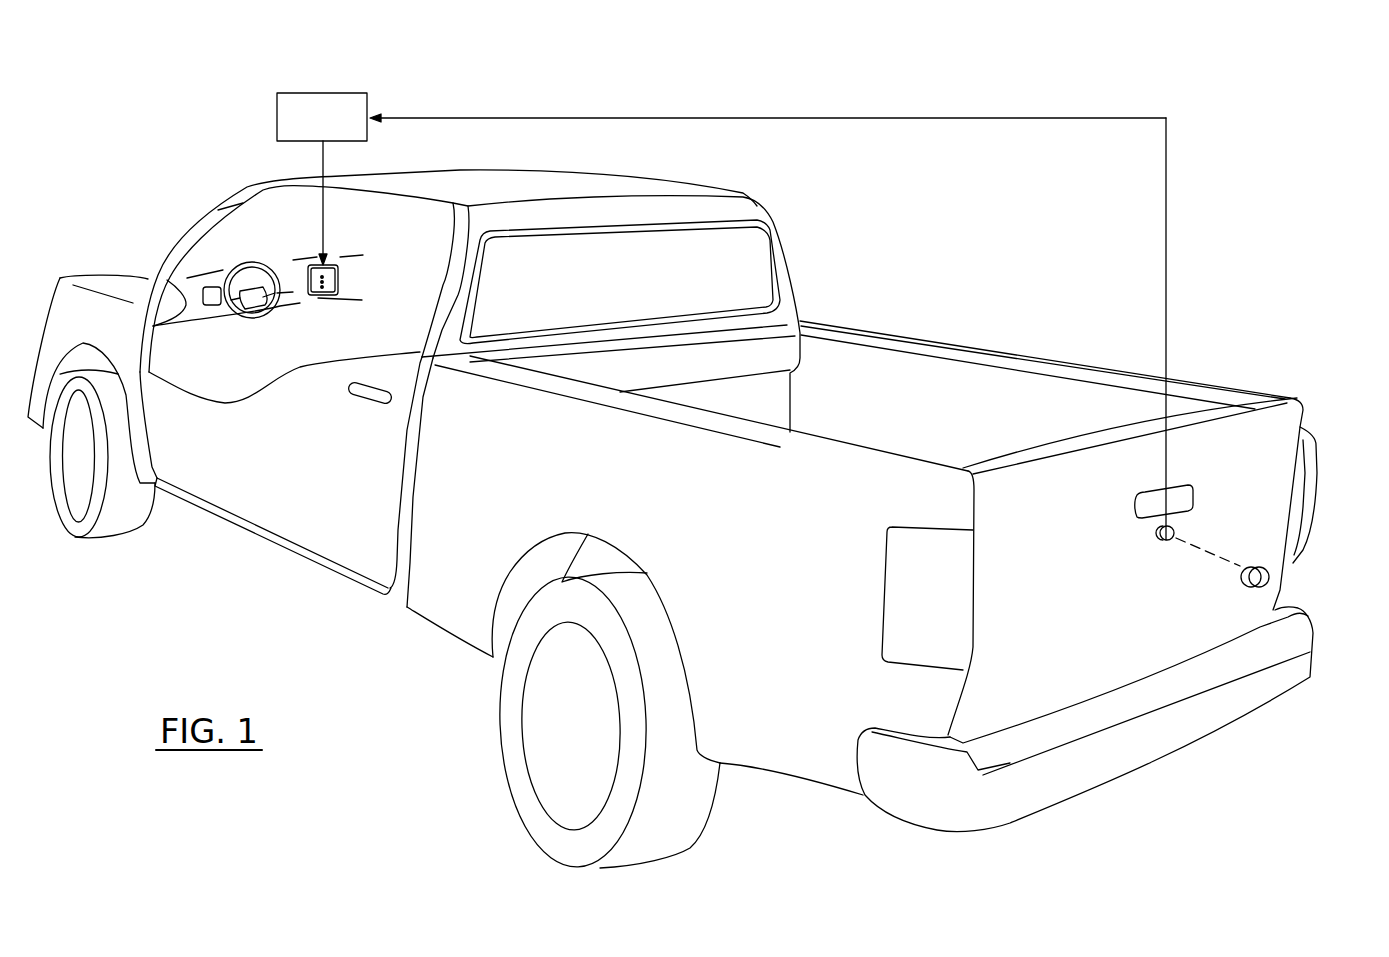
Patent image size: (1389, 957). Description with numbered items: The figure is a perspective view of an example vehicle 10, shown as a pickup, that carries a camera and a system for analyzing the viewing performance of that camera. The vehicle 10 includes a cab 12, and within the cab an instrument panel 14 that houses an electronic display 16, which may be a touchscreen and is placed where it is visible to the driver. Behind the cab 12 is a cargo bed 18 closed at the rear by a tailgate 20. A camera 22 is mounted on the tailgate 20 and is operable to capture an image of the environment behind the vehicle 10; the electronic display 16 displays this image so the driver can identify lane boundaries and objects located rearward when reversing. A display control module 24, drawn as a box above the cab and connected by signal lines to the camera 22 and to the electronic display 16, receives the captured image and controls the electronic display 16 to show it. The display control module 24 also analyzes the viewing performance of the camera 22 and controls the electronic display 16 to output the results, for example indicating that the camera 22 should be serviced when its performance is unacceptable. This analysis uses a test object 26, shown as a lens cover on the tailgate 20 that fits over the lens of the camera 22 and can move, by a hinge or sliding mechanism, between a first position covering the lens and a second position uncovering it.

The vehicle 10 is at (1250, 118).
The cab 12 is at (750, 206).
The instrument panel 14 is at (177, 294).
The electronic display 16 is at (338, 278).
The cargo bed 18 is at (467, 565).
The tailgate 20 is at (1288, 423).
The camera 22 is at (1163, 541).
The display control module 24 is at (350, 92).
The test object 26 is at (1249, 566).